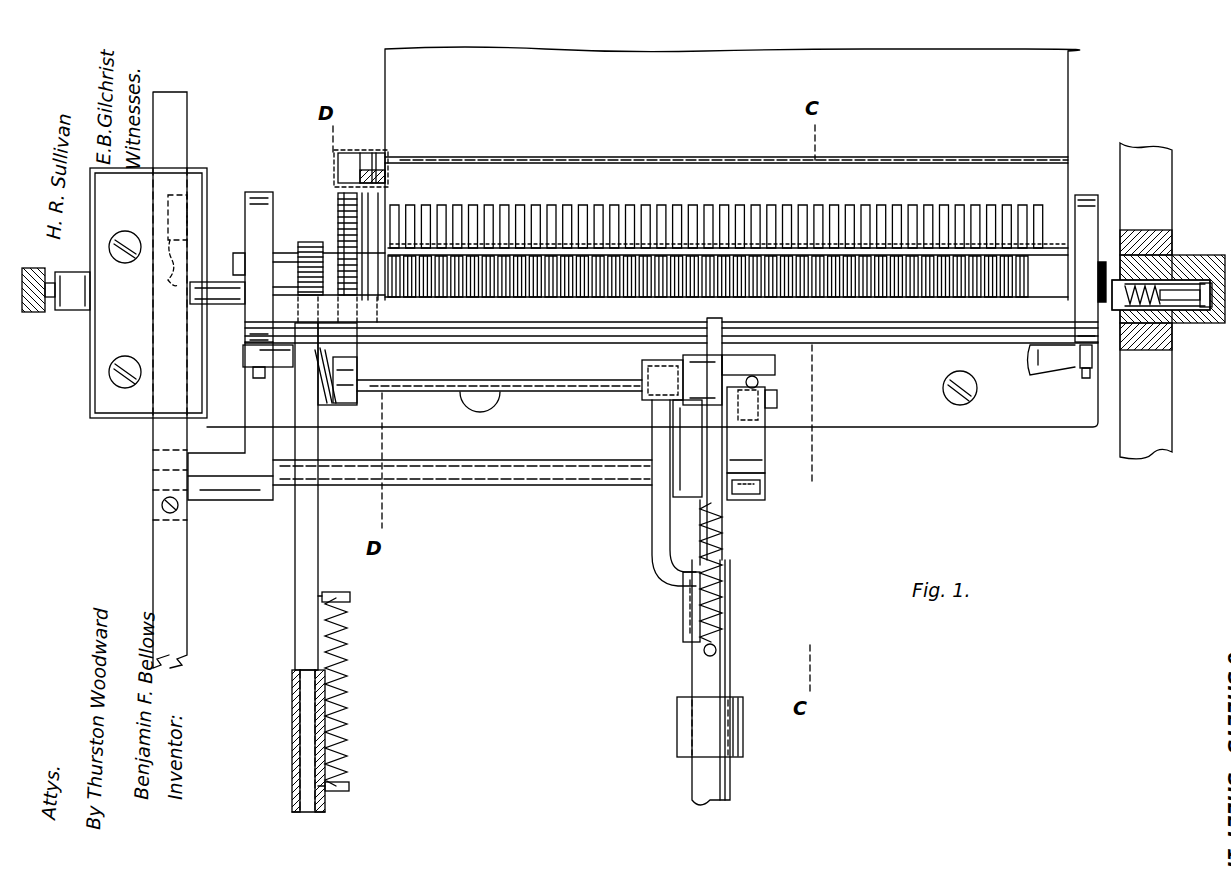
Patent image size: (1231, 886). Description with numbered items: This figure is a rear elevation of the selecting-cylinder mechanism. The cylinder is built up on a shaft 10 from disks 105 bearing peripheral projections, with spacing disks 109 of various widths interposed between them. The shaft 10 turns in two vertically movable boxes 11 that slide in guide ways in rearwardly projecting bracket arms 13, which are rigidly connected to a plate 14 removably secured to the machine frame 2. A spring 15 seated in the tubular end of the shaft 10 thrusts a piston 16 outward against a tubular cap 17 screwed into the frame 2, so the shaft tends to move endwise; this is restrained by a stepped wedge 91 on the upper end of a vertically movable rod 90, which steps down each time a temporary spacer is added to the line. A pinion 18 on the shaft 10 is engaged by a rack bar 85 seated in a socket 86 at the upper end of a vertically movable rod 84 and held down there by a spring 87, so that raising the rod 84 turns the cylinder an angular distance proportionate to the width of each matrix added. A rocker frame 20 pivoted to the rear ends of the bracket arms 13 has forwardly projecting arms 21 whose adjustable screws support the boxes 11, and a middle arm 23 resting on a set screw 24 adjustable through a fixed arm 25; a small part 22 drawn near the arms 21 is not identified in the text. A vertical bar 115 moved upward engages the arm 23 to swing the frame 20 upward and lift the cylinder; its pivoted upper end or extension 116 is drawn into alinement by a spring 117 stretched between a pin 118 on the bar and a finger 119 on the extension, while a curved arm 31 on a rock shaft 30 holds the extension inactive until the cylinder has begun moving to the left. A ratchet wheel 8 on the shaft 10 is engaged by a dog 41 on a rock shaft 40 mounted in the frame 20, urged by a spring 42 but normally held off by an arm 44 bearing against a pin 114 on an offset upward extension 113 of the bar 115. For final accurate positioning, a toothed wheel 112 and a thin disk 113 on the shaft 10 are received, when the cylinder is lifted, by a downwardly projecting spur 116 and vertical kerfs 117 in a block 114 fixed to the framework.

The frame 2 is at (1146, 301).
The ratchet wheel 8 is at (338, 200).
The shaft 10 is at (133, 290).
The vertically movable boxes 11 is at (243, 268).
The bracket arms 13 is at (673, 267).
The plate 14 is at (652, 384).
The spring 15 is at (1140, 320).
The piston 16 is at (1180, 302).
The tubular cap 17 is at (1198, 258).
The pinion 18 is at (310, 243).
The frame 20 is at (671, 345).
The forwardly projecting arms 21 is at (252, 362).
The bracket 22 is at (245, 348).
The arm 23 is at (775, 368).
The set screw 24 is at (759, 382).
The fixed arm 25 is at (783, 399).
The rock shaft 30 is at (536, 488).
The curved arm 31 is at (719, 442).
The rock shaft 40 is at (557, 380).
The dog 41 is at (348, 405).
The spring 42 is at (312, 405).
The arm 44 is at (643, 397).
The vertically movable rod 84 is at (293, 738).
The rack bar 85 is at (318, 513).
The socket 86 is at (292, 768).
The spring 87 is at (346, 716).
The vertically movable rod 90 is at (170, 380).
The stepped wedge 91 is at (190, 291).
The disks 105 is at (454, 288).
The spacing disks 109 is at (802, 285).
The toothed wheel 112 is at (368, 200).
The thin disk 113 is at (652, 521).
The block 114 is at (338, 160).
The vertical bar 115 is at (718, 674).
The extension 116 is at (340, 179).
The spring 117 is at (371, 153).
The pin 118 is at (704, 652).
The finger 119 is at (718, 500).